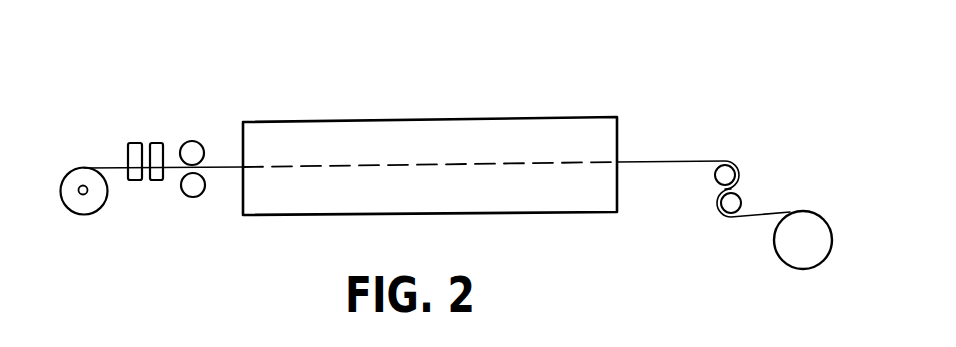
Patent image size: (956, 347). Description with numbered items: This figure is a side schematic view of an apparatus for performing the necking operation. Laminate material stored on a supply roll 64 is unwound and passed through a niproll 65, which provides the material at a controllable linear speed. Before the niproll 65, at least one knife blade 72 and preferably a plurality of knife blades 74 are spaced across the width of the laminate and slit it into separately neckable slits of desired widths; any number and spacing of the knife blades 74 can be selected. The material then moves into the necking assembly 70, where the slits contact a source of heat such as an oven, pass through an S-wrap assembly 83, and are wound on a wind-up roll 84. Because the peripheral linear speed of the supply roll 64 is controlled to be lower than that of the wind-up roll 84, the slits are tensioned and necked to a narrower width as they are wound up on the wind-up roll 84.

The supply roll 64 is at (60, 182).
The knife blades 74 is at (137, 143).
The knife blade 72 is at (155, 143).
The niproll 65 is at (200, 195).
The necking assembly 70 is at (375, 53).
The S-wrap assembly 83 is at (736, 128).
The wind-up roll 84 is at (826, 218).